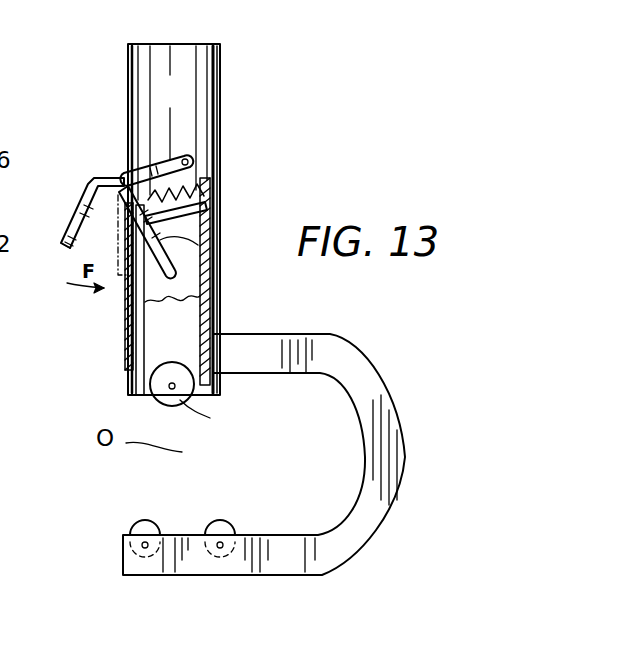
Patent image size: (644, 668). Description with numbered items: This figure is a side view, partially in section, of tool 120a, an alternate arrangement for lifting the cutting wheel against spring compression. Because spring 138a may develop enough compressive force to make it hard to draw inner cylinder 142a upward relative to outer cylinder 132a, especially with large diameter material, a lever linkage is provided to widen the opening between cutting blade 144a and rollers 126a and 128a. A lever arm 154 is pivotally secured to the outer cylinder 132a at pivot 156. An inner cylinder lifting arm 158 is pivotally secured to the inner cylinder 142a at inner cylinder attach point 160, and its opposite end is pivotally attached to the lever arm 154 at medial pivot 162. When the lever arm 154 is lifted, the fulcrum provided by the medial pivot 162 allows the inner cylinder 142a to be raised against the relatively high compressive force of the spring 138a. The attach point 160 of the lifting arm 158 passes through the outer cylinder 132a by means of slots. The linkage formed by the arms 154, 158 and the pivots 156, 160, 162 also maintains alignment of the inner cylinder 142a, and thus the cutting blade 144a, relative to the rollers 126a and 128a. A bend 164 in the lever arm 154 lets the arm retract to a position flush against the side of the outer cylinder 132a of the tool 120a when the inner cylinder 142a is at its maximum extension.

The tool 120a is at (331, 306).
The roller 126a is at (146, 534).
The roller 128a is at (222, 534).
The outer cylinder 132a is at (175, 85).
The spring 138a is at (210, 214).
The inner cylinder 142a is at (142, 376).
The cutting blade 144a is at (200, 418).
The lever arm 154 is at (62, 248).
The pivot 156 is at (205, 172).
The inner cylinder lifting arm 158 is at (213, 258).
The inner cylinder attach point 160 is at (178, 318).
The medial pivot 162 is at (120, 176).
The bend 164 is at (92, 180).